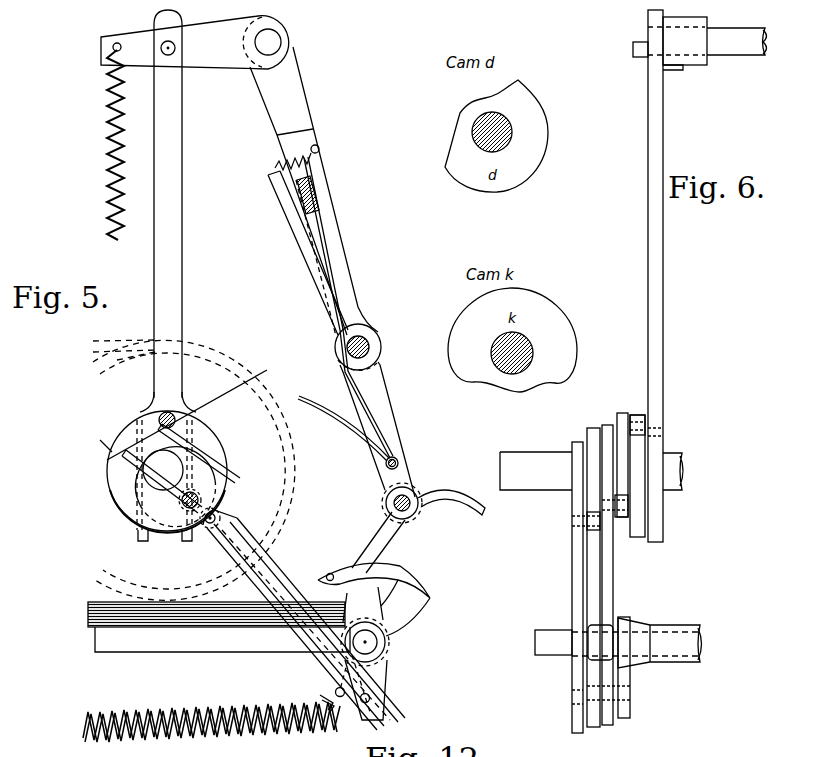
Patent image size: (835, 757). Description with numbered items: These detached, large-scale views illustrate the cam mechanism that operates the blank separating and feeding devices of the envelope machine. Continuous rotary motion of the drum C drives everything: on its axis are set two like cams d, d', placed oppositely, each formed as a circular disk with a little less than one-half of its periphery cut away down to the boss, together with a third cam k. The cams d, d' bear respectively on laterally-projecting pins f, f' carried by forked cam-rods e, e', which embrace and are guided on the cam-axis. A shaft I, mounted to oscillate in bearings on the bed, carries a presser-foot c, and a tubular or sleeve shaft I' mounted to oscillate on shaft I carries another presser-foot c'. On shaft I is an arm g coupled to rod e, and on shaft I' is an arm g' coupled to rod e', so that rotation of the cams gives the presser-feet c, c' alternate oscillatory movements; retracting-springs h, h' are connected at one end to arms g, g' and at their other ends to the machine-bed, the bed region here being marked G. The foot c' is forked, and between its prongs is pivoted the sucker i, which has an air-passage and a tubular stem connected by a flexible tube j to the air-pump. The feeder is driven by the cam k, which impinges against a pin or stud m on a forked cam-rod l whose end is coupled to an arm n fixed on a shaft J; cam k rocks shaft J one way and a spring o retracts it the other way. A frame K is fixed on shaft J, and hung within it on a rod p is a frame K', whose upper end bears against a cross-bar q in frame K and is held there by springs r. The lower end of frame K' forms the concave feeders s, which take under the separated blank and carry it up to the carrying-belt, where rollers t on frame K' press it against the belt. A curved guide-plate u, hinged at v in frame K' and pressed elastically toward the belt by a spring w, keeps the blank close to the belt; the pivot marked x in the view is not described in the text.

In FIG. 5, the forked cam-rod l is at (168, 211).
In FIG. 6, the forked cam-rod l is at (660, 276).
In FIG. 5, the arm n is at (195, 42).
In FIG. 6, the arm n is at (670, 43).
In FIG. 5, the shaft J is at (282, 43).
In FIG. 6, the shaft J is at (737, 41).
In FIG. 5, the spring o is at (109, 158).
In FIG. 5, the frame K is at (314, 191).
In FIG. 5, the springs r is at (297, 156).
In FIG. 5, the cross-bar q is at (314, 196).
In FIG. 5, the spring w is at (344, 307).
In FIG. 5, the rod p is at (370, 347).
In FIG. 5, the frame K' is at (378, 429).
In FIG. 5, the curved guide-plate u is at (343, 428).
In FIG. 5, the hinge v is at (399, 462).
In FIG. 5, the rollers t is at (385, 506).
In FIG. 5, the flexible tube j is at (463, 496).
In FIG. 5, the drum C is at (194, 470).
In FIG. 5, the cam d is at (173, 471).
In FIG. 6, the cam d is at (593, 564).
In FIG. 5, the cam d' is at (151, 468).
In FIG. 6, the cam d' is at (615, 455).
In FIG. 5, the pin or stud m is at (196, 410).
In FIG. 6, the pin or stud m is at (637, 412).
In FIG. 5, the cam k is at (163, 532).
In FIG. 6, the cam k is at (656, 476).
In FIG. 5, the laterally-projecting pin f is at (221, 518).
In FIG. 6, the laterally-projecting pin f is at (576, 527).
In FIG. 5, the laterally-projecting pin f' is at (210, 499).
In FIG. 6, the laterally-projecting pin f' is at (615, 517).
In FIG. 5, the forked cam-rod e is at (304, 620).
In FIG. 6, the forked cam-rod e is at (541, 587).
In FIG. 5, the forked cam-rod e' is at (306, 625).
In FIG. 6, the forked cam-rod e' is at (616, 575).
In FIG. 5, the shaft I is at (216, 614).
In FIG. 6, the shaft I is at (617, 643).
In FIG. 5, the base G is at (222, 639).
In FIG. 5, the retracting-spring h is at (211, 729).
In FIG. 5, the retracting-spring h' is at (269, 701).
In FIG. 5, the pivot x is at (378, 642).
In FIG. 5, the presser-foot c is at (382, 610).
In FIG. 5, the sucker i is at (359, 562).
In FIG. 5, the presser-foot c' is at (408, 585).
In FIG. 5, the concave feeders s is at (396, 566).
In FIG. 5, the arm g is at (367, 687).
In FIG. 6, the arm g is at (601, 691).
In FIG. 5, the arm g' is at (316, 695).
In FIG. 6, the arm g' is at (639, 667).
In FIG. 5, the tubular or sleeve shaft I' is at (370, 671).
In FIG. 6, the tubular or sleeve shaft I' is at (660, 643).